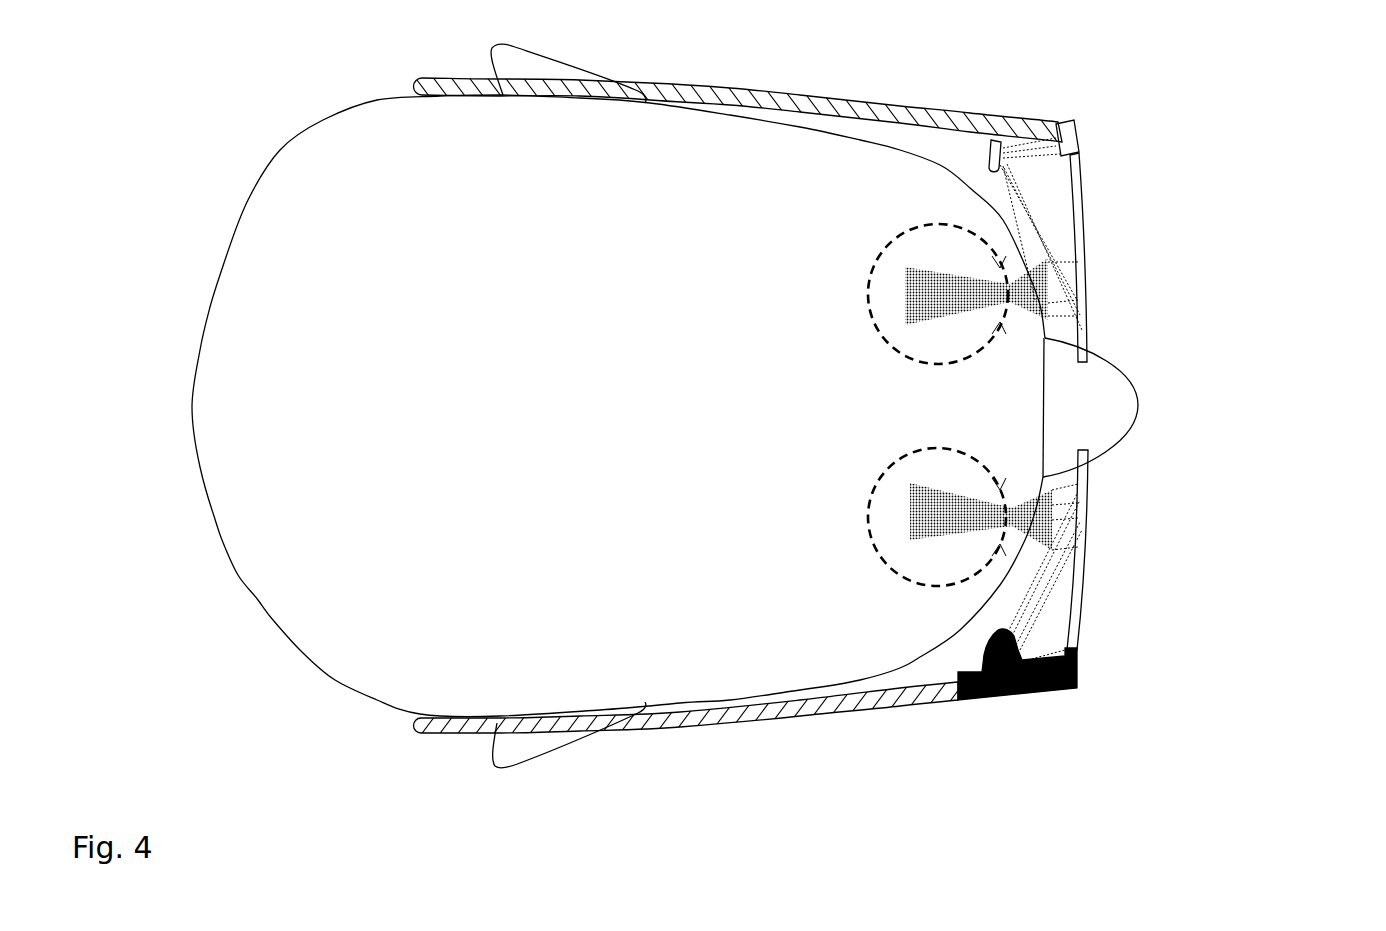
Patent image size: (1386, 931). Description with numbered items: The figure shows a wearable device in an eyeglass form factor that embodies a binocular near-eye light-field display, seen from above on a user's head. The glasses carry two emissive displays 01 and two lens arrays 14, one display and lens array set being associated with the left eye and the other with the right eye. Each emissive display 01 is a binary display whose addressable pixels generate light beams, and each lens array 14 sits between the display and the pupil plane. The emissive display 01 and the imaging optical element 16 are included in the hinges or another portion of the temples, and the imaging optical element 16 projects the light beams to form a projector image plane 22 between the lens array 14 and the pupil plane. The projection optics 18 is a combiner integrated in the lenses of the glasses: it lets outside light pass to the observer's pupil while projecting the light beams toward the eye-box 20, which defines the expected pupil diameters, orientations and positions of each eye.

The emissive display 01 is at (1082, 142).
The lens array 14 is at (1061, 121).
The imaging optical element 16 is at (995, 151).
The projection optics 18 is at (1085, 282).
The eye-box 20 is at (947, 309).
The projector image plane 22 is at (1051, 203).